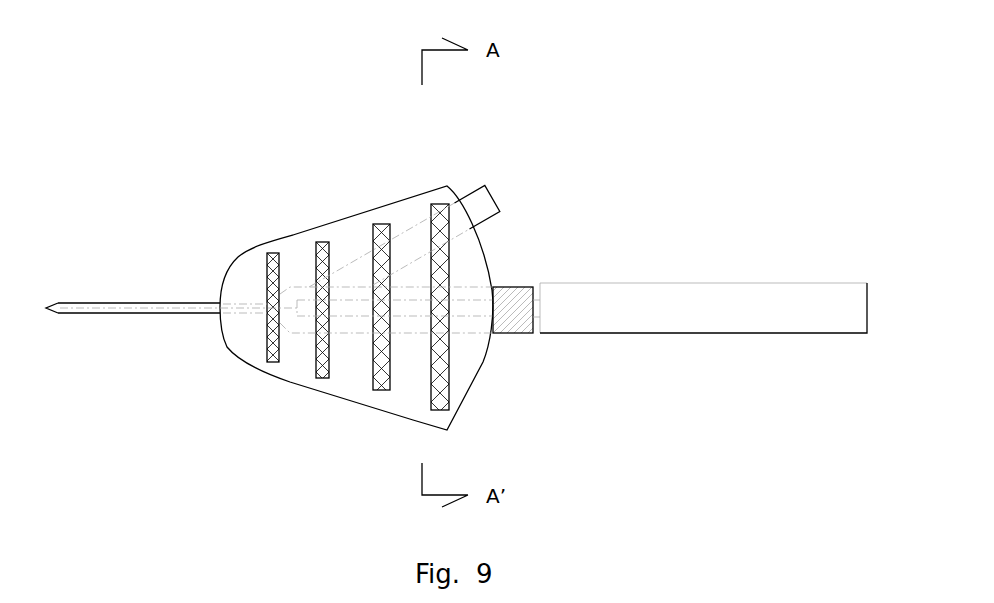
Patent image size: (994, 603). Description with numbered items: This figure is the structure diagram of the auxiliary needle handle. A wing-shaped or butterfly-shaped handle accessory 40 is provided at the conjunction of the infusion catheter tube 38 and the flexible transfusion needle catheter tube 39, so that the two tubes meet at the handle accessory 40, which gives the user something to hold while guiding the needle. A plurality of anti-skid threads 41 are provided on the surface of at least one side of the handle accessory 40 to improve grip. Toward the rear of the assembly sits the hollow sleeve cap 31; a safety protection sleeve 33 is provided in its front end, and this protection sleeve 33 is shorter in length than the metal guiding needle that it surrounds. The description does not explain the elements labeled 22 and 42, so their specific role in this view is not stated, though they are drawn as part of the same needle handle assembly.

The needle passage 22 is at (286, 307).
The sleeve cap 31 is at (677, 305).
The safety protection sleeve 33 is at (355, 298).
The infusion catheter tube 38 is at (486, 186).
The flexible transfusion needle catheter tube 39 is at (134, 302).
The handle accessory 40 is at (344, 243).
The anti-skid threads 41 is at (385, 252).
The piston seal 42 is at (521, 303).